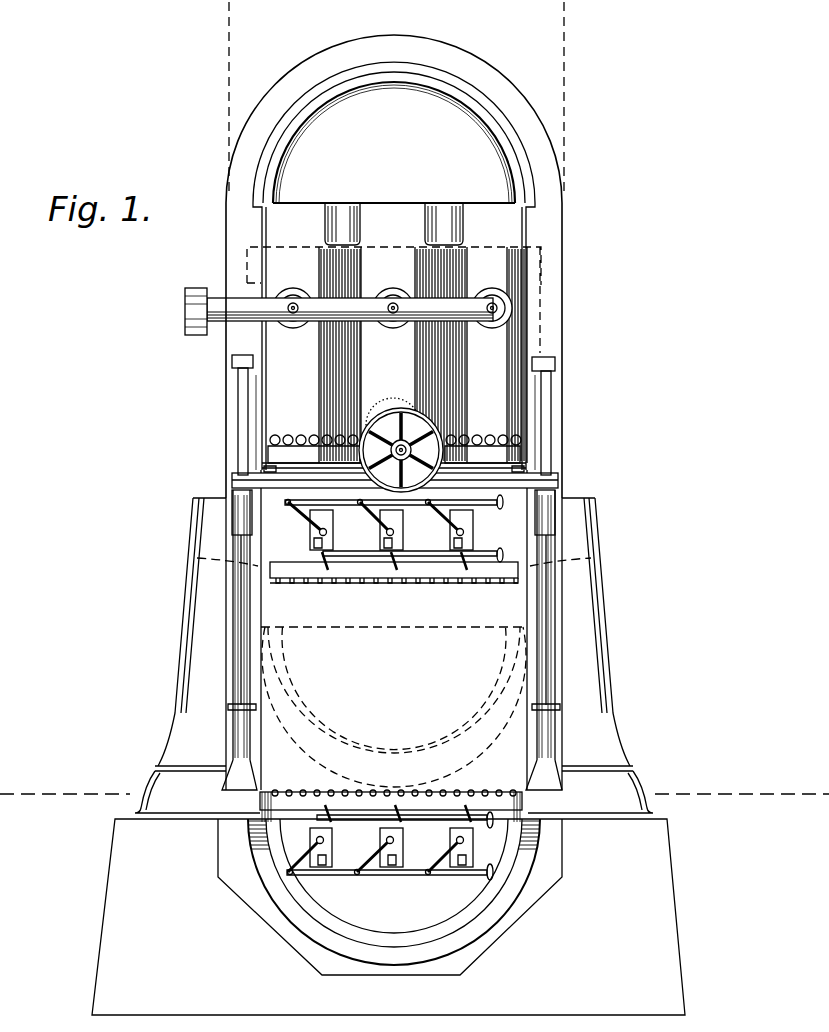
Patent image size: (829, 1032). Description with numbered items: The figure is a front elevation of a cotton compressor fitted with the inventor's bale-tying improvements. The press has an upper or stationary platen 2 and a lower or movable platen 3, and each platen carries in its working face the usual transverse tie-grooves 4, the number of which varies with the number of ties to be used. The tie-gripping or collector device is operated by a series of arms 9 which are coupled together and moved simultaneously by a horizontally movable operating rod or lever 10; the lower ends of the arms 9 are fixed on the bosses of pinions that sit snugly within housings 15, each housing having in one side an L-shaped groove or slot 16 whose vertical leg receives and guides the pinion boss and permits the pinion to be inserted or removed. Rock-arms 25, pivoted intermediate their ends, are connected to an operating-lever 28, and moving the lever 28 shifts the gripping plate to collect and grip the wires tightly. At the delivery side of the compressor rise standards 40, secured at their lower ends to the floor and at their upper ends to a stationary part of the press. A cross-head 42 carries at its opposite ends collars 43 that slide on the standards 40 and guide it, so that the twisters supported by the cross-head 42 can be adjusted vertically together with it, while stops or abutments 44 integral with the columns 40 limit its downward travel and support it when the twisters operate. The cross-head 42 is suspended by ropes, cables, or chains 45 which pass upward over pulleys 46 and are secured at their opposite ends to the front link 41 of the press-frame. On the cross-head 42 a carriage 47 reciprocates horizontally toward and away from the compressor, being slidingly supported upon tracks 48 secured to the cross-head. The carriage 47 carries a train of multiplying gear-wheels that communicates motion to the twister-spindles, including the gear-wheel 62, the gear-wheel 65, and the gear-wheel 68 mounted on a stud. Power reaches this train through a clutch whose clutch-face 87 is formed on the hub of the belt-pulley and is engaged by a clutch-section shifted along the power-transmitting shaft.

The upper or stationary platen 2 is at (513, 557).
The lower or movable platen 3 is at (478, 805).
The tie-grooves 4 is at (300, 795).
The arms 9 is at (440, 852).
The operating rod or lever 10 is at (440, 880).
The housings 15 is at (317, 866).
The L-shaped groove or slot 16 is at (311, 546).
The rock-arms 25 is at (357, 808).
The operating-lever 28 is at (413, 818).
The standards 40 is at (545, 660).
The front link of the press-frame 41 is at (538, 848).
The cross-head 42 is at (243, 484).
The collars 43 is at (558, 487).
The stops or abutments 44 is at (537, 705).
The ropes, cables, or chains 45 is at (550, 406).
The pulleys 46 is at (556, 375).
The carriage 47 is at (517, 458).
The tracks 48 is at (522, 472).
The gear-wheel 62 is at (434, 428).
The gear-wheel 65 is at (399, 412).
The gear-wheel 68 is at (377, 425).
The clutch-face 87 is at (495, 436).